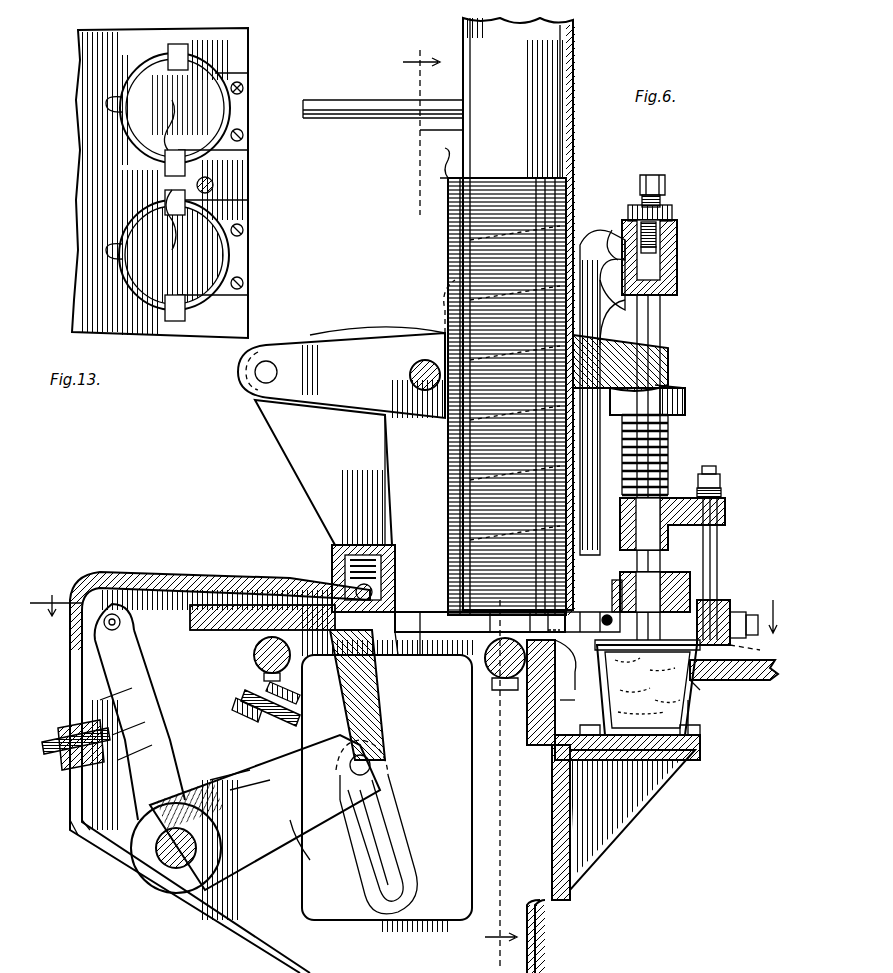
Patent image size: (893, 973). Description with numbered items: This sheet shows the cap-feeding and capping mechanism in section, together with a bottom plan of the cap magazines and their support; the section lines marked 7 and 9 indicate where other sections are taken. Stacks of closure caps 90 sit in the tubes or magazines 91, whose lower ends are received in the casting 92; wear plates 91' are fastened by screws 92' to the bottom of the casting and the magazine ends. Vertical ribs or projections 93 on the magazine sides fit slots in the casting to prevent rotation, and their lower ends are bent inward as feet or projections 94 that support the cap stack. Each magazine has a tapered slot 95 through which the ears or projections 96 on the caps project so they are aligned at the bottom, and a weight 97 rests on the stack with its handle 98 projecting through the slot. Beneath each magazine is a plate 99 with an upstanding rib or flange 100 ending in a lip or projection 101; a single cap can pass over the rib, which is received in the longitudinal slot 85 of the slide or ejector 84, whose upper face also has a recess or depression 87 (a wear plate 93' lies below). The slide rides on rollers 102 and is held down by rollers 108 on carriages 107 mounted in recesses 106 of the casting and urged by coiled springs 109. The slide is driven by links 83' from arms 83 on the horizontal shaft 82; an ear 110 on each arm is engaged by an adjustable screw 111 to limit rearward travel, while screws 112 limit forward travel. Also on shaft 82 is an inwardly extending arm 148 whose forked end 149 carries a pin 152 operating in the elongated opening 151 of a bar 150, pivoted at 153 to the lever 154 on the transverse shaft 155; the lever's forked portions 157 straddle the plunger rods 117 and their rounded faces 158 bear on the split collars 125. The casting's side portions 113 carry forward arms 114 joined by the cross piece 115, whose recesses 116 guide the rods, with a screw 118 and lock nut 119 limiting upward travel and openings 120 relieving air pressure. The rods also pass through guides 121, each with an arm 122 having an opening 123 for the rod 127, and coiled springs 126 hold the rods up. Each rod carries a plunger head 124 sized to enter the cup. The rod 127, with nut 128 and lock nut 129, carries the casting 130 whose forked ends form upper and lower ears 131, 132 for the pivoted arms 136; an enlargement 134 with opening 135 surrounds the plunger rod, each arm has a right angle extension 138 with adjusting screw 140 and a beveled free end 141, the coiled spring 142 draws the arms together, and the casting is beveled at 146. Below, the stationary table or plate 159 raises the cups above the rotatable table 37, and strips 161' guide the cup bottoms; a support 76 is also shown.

In FIG. 6, the section line 7 is at (407, 609).
In FIG. 6, the section line 9 is at (460, 502).
In FIG. 6, the rotatable table 37 is at (768, 680).
In FIG. 6, the mold support 76 is at (572, 700).
In FIG. 6, the horizontal shaft 82 is at (170, 860).
In FIG. 6, the arms 83 is at (265, 812).
In FIG. 6, the links 83' is at (119, 587).
In FIG. 6, the slide or ejector 84 is at (235, 605).
In FIG. 6, the longitudinal slot 85 is at (400, 655).
In FIG. 6, the recess or depression 87 is at (419, 655).
In FIG. 6, the closure caps 90 is at (498, 178).
In FIG. 13, the closure caps 90 is at (140, 136).
In FIG. 6, the tubes or magazines 91 is at (590, 229).
In FIG. 13, the tubes or magazines 91 is at (142, 195).
In FIG. 6, the wear plates 91' is at (585, 622).
In FIG. 13, the wear plates 91' is at (261, 191).
In FIG. 6, the casting 92 is at (602, 392).
In FIG. 13, the casting 92 is at (164, 116).
In FIG. 13, the screws 92' is at (262, 150).
In FIG. 13, the ribs or projections 93 is at (163, 179).
In FIG. 6, the base plate 93' is at (480, 623).
In FIG. 6, the feet or projections 94 is at (485, 670).
In FIG. 13, the feet or projections 94 is at (165, 68).
In FIG. 6, the tapered slot 95 is at (429, 133).
In FIG. 6, the ears or projections 96 is at (612, 718).
In FIG. 13, the ears or projections 96 is at (110, 110).
In FIG. 6, the weight 97 is at (545, 75).
In FIG. 6, the handle 98 is at (368, 118).
In FIG. 6, the plates 99 is at (528, 700).
In FIG. 6, the rib or flange 100 is at (470, 690).
In FIG. 6, the lip or projection 101 is at (590, 618).
In FIG. 6, the rollers 102 is at (255, 660).
In FIG. 6, the recesses 106 is at (392, 548).
In FIG. 6, the carriages 107 is at (392, 570).
In FIG. 6, the rollers 108 is at (392, 590).
In FIG. 6, the coiled springs 109 is at (355, 545).
In FIG. 6, the ear 110 is at (142, 745).
In FIG. 6, the adjustable screw 111 is at (55, 755).
In FIG. 6, the adjustable screws 112 is at (283, 730).
In FIG. 6, the side portions 113 is at (440, 310).
In FIG. 6, the arms 114 is at (615, 240).
In FIG. 6, the cross piece 115 is at (680, 268).
In FIG. 6, the recesses 116 is at (660, 252).
In FIG. 6, the plunger rods 117 is at (660, 322).
In FIG. 6, the screw 118 is at (660, 176).
In FIG. 6, the lock nuts 119 is at (662, 208).
In FIG. 6, the openings 120 is at (610, 322).
In FIG. 6, the guides 121 is at (670, 500).
In FIG. 6, the arm 122 is at (726, 520).
In FIG. 6, the vertically extending opening 123 is at (722, 492).
In FIG. 6, the plunger head 124 is at (648, 652).
In FIG. 6, the adjustable split collar 125 is at (686, 400).
In FIG. 6, the coiled spring 126 is at (670, 452).
In FIG. 6, the rod 127 is at (718, 558).
In FIG. 6, the nut 128 is at (720, 478).
In FIG. 6, the lock nut 129 is at (710, 466).
In FIG. 6, the casting 130 is at (718, 600).
In FIG. 6, the upper ear 131 is at (694, 600).
In FIG. 6, the lower ear 132 is at (760, 653).
In FIG. 6, the enlargement 134 is at (615, 580).
In FIG. 6, the vertically extending opening 135 is at (664, 570).
In FIG. 6, the arm 136 is at (684, 712).
In FIG. 6, the right angle extension 138 is at (748, 616).
In FIG. 6, the adjusting screw 140 is at (760, 632).
In FIG. 6, the beveled free end 141 is at (647, 690).
In FIG. 6, the coiled spring 142 is at (575, 668).
In FIG. 6, the beveled inner face 146 is at (713, 692).
In FIG. 6, the inwardly extending arm 148 is at (283, 850).
In FIG. 6, the forked end 149 is at (372, 762).
In FIG. 6, the bar 150 is at (360, 714).
In FIG. 6, the elongated opening 151 is at (385, 835).
In FIG. 6, the pin 152 is at (356, 780).
In FIG. 6, the pivot 153 is at (268, 370).
In FIG. 6, the lever 154 is at (350, 344).
In FIG. 6, the transversely extending shaft 155 is at (415, 388).
In FIG. 6, the forked portion 157 is at (670, 358).
In FIG. 6, the rounded lower faces 158 is at (676, 388).
In FIG. 6, the stationary table or plate 159 is at (625, 818).
In FIG. 6, the longitudinally extending strips 161' is at (650, 734).